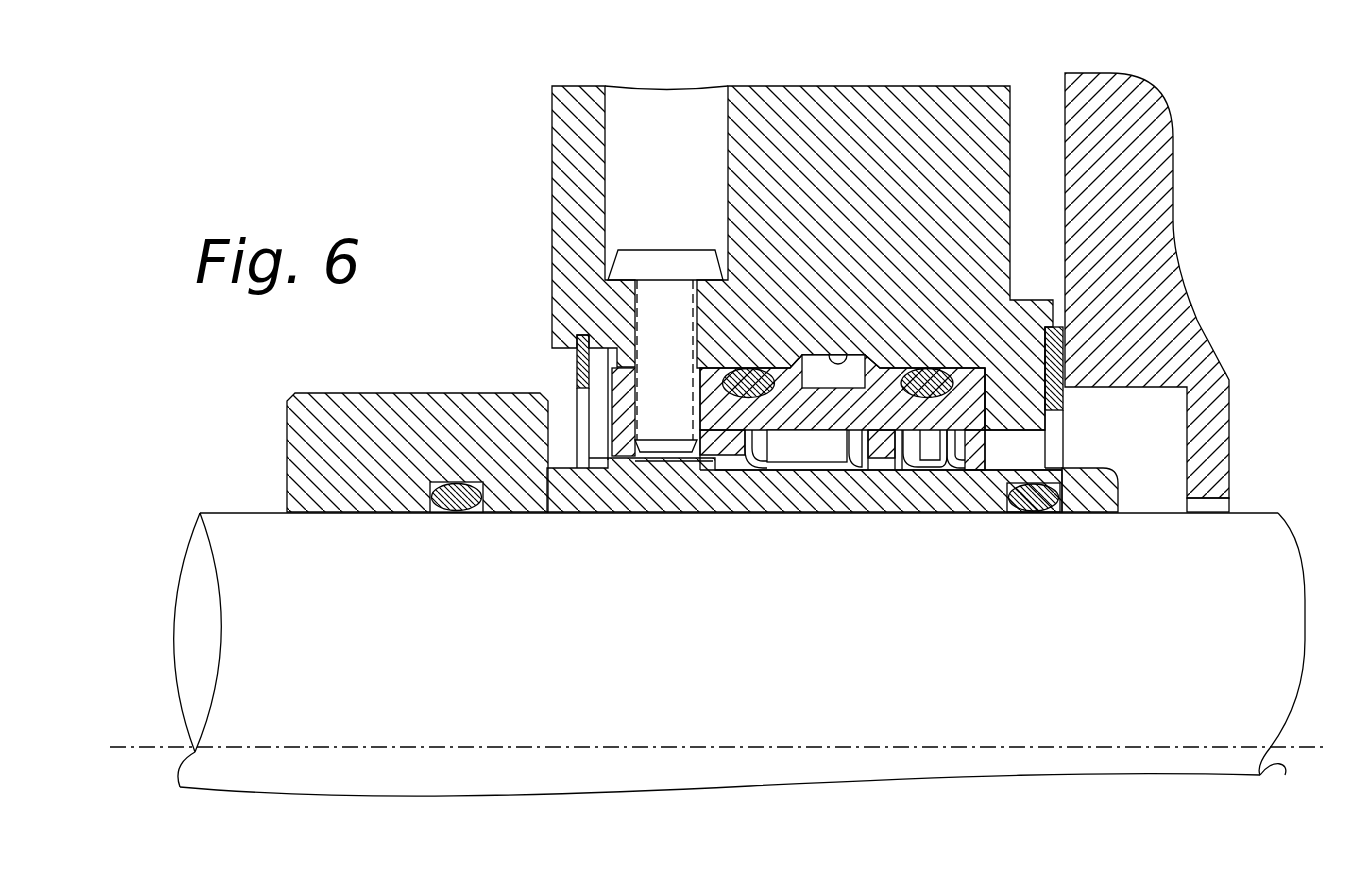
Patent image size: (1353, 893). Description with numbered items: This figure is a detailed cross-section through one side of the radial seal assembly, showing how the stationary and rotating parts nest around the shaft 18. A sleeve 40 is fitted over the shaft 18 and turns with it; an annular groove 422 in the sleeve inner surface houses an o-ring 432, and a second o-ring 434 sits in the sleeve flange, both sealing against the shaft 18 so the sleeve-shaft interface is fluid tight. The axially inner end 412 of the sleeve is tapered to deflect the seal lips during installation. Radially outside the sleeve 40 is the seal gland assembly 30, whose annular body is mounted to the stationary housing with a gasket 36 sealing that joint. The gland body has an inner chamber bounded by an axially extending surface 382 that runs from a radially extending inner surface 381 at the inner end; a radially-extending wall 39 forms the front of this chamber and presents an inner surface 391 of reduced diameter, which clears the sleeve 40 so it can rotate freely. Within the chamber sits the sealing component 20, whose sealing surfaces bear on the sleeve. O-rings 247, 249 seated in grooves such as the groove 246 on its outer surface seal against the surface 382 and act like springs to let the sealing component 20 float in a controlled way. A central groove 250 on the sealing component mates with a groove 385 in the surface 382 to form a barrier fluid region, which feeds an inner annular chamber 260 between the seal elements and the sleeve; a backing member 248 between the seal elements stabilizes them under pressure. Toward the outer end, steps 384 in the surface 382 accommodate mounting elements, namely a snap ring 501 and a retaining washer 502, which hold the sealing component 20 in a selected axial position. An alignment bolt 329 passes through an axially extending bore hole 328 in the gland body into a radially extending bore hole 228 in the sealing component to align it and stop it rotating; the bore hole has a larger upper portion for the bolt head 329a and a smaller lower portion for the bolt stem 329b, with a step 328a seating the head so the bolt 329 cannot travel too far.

The shaft 18 is at (742, 681).
The sealing component 20 is at (735, 416).
The seal gland assembly 30 is at (958, 84).
The gasket 36 is at (1070, 357).
The radially-extending wall 39 is at (1023, 322).
The sleeve 40 is at (550, 492).
The radially extending bore hole 228 is at (642, 455).
The groove 246 is at (742, 400).
The o-ring 247 is at (749, 365).
The backing member 248 is at (960, 400).
The o-ring 249 is at (932, 362).
The central groove 250 is at (834, 379).
The inner annular chamber 260 is at (790, 462).
The axially extending bore hole 328 is at (649, 141).
The step 328a is at (607, 278).
The alignment bolt 329 is at (688, 247).
The bolt head 329a is at (644, 281).
The bolt stem 329b is at (642, 349).
The radially extending inner surface 381 is at (972, 369).
The axially extending surface 382 is at (882, 367).
The step 384 is at (577, 336).
The groove 385 is at (838, 364).
The axially extending inner surface 391 is at (1004, 438).
The axially inner end 412 is at (1111, 482).
The annular groove 422 is at (432, 511).
The o-ring 432 is at (456, 480).
The o-ring 434 is at (1069, 487).
The snap ring 501 is at (578, 374).
The retaining washer 502 is at (620, 423).